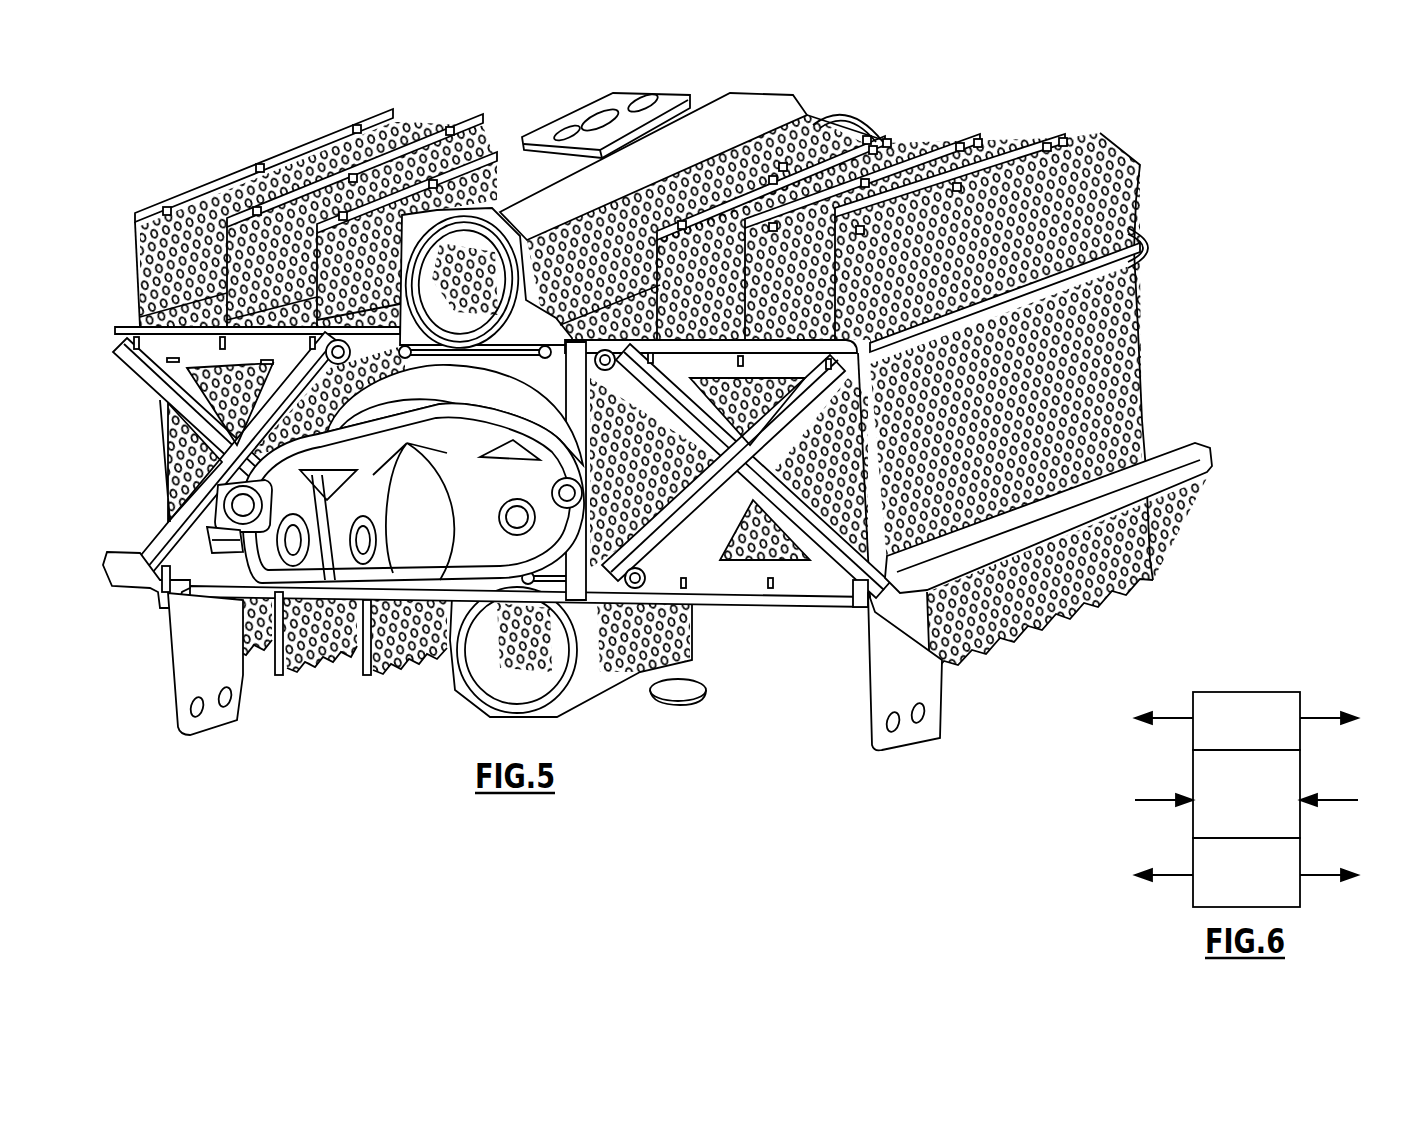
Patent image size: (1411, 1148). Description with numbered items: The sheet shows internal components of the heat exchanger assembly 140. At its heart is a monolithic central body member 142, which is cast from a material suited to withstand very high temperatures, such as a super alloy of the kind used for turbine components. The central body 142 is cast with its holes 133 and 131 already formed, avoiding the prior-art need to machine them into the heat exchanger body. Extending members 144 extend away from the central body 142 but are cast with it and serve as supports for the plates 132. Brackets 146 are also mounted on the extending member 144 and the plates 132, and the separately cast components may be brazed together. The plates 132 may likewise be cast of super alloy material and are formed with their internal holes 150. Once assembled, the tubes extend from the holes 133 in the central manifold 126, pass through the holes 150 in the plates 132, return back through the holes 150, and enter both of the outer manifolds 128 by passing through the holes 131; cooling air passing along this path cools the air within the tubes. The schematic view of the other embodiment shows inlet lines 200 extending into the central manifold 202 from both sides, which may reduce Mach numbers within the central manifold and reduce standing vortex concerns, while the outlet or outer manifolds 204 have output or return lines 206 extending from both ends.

In FIG. 5, the heat exchanger assembly 140 is at (1055, 88).
In FIG. 5, the monolithic central body member 142 is at (740, 130).
In FIG. 5, the outer manifolds 128 is at (513, 225).
In FIG. 5, the brackets 146 is at (300, 317).
In FIG. 5, the plates 132 is at (243, 187).
In FIG. 5, the internal holes 150 is at (146, 262).
In FIG. 5, the holes 133 is at (605, 414).
In FIG. 5, the central manifold 126 is at (647, 527).
In FIG. 5, the extending members 144 is at (813, 582).
In FIG. 5, the holes 131 is at (520, 680).
In FIG. 6, the inlet lines 200 is at (1155, 800).
In FIG. 6, the central manifold 202 is at (1269, 813).
In FIG. 6, the outlet or outer manifolds 204 is at (1269, 731).
In FIG. 6, the output or return lines 206 is at (1178, 716).